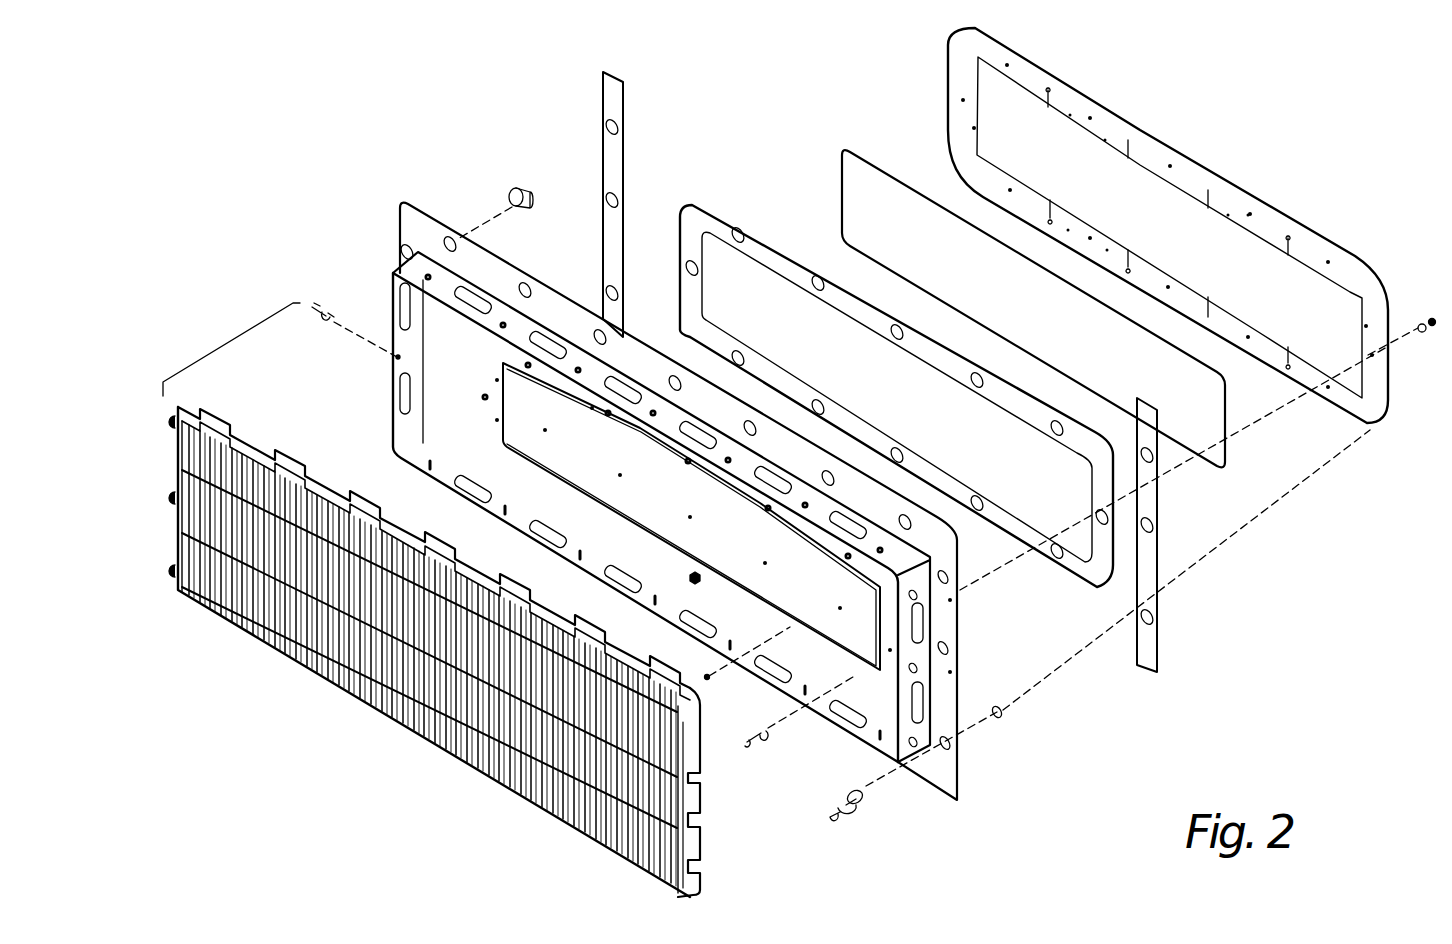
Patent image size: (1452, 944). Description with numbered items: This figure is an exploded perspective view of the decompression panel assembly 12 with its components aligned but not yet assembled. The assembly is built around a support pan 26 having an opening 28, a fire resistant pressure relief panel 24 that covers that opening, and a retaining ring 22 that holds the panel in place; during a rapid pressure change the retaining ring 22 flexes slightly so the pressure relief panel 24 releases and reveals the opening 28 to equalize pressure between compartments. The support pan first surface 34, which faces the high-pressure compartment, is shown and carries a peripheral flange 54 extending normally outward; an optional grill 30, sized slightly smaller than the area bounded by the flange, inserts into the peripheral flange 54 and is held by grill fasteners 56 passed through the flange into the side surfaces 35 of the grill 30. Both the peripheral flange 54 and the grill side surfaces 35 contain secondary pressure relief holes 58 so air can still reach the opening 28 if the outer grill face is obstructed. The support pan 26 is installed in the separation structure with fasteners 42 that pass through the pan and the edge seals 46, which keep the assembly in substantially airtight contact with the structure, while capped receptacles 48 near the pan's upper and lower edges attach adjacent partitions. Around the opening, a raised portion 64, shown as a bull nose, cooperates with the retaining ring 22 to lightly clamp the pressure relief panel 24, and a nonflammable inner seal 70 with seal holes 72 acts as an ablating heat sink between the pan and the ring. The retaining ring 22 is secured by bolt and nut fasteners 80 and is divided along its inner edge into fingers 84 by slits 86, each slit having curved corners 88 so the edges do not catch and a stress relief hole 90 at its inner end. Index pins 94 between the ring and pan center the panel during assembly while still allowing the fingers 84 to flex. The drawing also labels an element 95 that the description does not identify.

The decompression panel assembly 12 is at (425, 133).
The retaining ring 22 is at (1367, 425).
The fire resistant pressure relief panel 24 is at (842, 147).
The support pan 26 is at (957, 800).
The opening 28 is at (748, 592).
The grill 30 is at (606, 856).
The support pan first surface 34 is at (443, 410).
The side surfaces 35 is at (692, 872).
The fasteners 42 is at (400, 250).
The edge seals 46 is at (608, 100).
The capped receptacles 48 is at (510, 194).
The peripheral flange 54 is at (392, 290).
The grill fasteners 56 is at (232, 346).
The secondary pressure relief holes 58 is at (690, 760).
The raised portion 64 is at (595, 492).
The inner seal 70 is at (700, 214).
The seal holes 72 is at (740, 228).
The fasteners 80 is at (691, 572).
The fingers 84 is at (1168, 270).
The slits 86 is at (1058, 210).
The curved corners 88 is at (1290, 345).
The stress relief holes 90 is at (1056, 88).
The index pins 94 is at (705, 676).
The tab 95 is at (1285, 238).